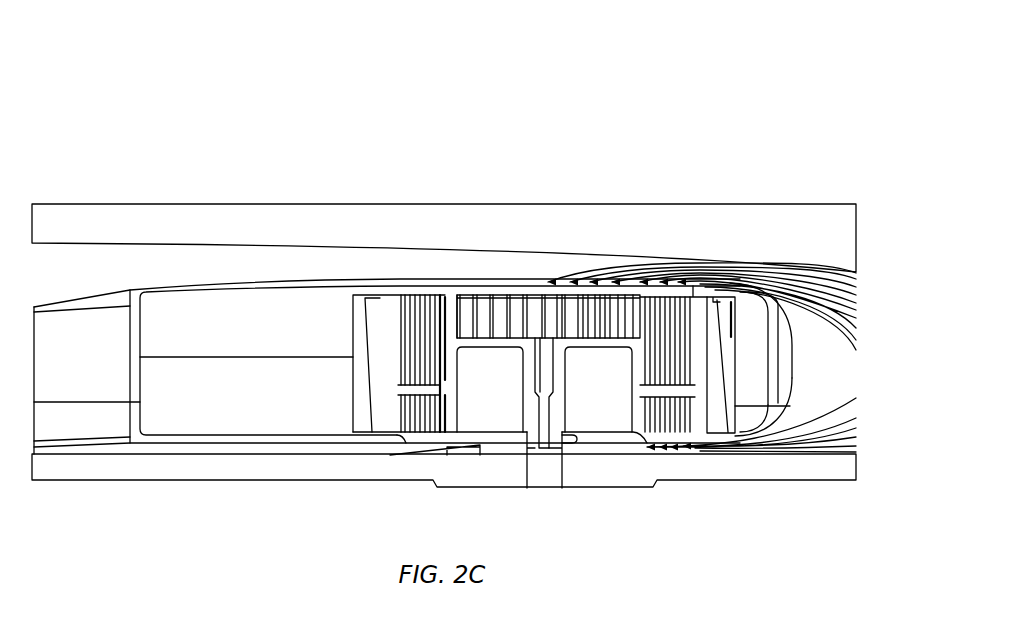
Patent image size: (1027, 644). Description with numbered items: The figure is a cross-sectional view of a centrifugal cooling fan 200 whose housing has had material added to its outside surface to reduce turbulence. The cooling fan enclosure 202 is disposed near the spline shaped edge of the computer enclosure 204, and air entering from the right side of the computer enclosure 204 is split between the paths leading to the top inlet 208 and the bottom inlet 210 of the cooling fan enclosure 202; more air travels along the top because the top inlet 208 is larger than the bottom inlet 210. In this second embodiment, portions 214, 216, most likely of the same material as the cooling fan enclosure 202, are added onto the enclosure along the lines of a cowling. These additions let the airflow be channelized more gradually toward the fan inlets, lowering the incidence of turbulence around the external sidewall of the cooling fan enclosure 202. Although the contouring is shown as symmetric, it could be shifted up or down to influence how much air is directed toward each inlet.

The cooling fan 200 is at (310, 105).
The cooling fan enclosure 202 is at (228, 282).
The computer enclosure 204 is at (433, 236).
The top inlet 208 is at (535, 269).
The bottom inlet 210 is at (647, 449).
The portion 214 is at (784, 333).
The portion 216 is at (781, 404).